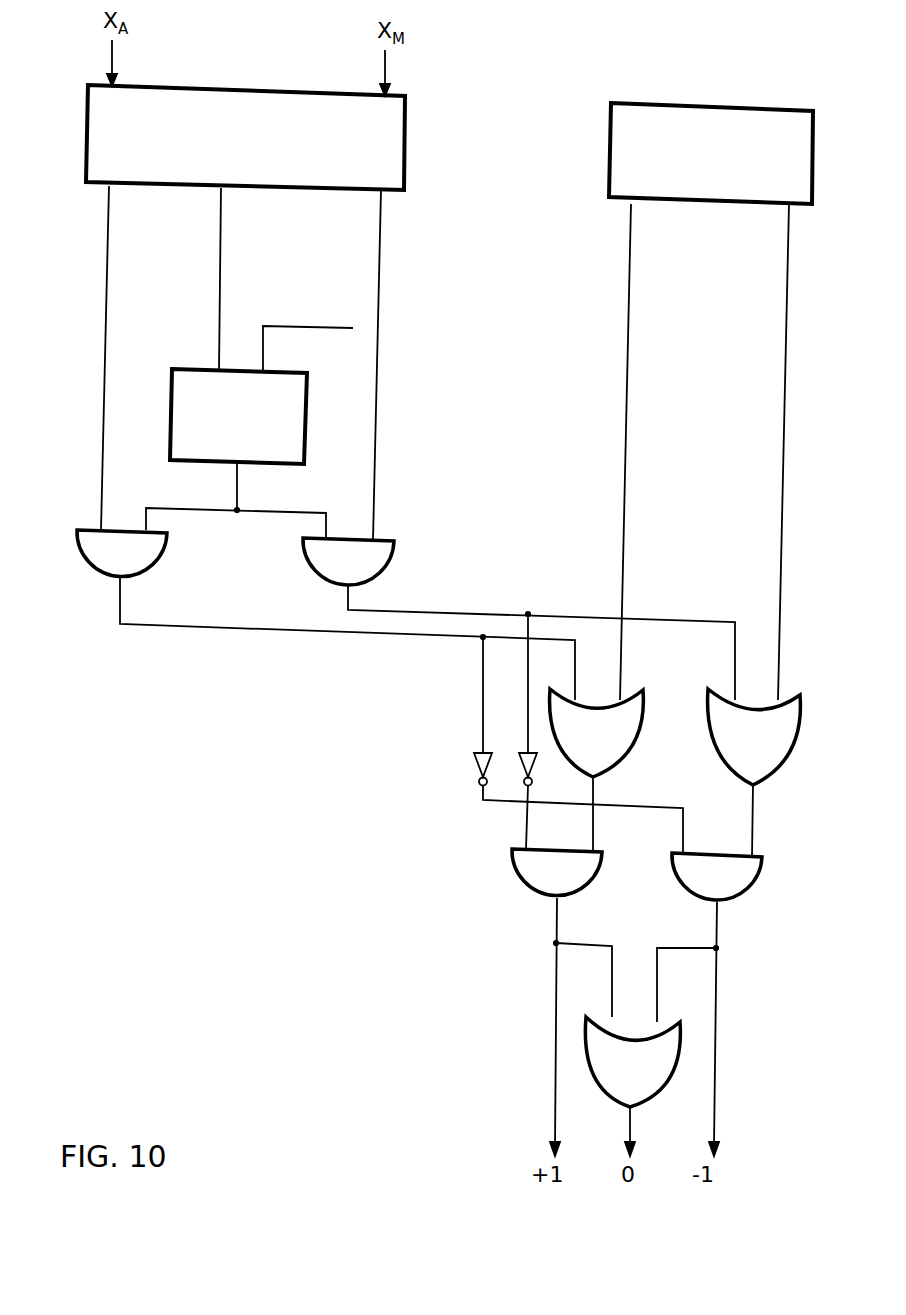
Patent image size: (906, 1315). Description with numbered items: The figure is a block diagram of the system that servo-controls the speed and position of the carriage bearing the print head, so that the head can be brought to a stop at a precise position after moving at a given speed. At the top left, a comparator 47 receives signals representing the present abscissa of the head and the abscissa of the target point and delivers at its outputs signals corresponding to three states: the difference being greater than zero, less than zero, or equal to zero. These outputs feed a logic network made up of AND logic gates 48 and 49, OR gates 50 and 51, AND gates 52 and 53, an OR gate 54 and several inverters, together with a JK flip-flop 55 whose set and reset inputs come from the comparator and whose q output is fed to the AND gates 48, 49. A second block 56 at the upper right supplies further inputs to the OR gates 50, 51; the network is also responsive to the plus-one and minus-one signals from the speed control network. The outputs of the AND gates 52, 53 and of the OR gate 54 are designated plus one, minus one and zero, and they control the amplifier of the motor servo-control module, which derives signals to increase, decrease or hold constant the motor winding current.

The comparator 47 is at (405, 118).
The register 56 is at (611, 124).
The JK flip-flop 55 is at (331, 398).
The AND logic gate 48 is at (184, 553).
The AND logic gate 49 is at (304, 553).
The OR gate 50 is at (637, 748).
The OR gate 51 is at (720, 748).
The AND gate 52 is at (567, 900).
The AND gate 53 is at (703, 902).
The OR gate 54 is at (632, 1040).